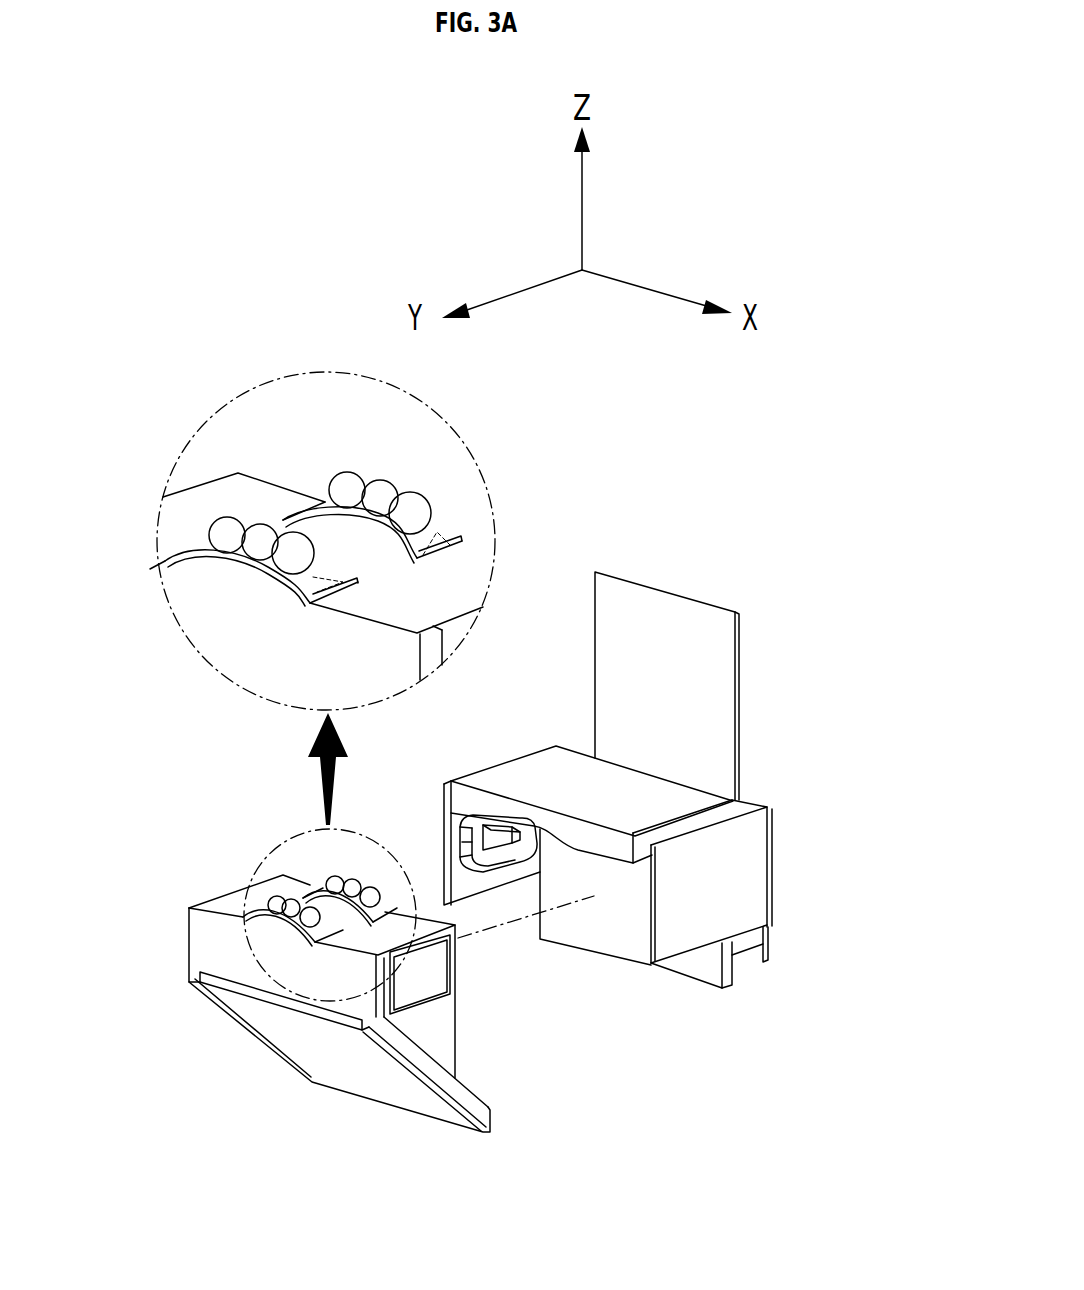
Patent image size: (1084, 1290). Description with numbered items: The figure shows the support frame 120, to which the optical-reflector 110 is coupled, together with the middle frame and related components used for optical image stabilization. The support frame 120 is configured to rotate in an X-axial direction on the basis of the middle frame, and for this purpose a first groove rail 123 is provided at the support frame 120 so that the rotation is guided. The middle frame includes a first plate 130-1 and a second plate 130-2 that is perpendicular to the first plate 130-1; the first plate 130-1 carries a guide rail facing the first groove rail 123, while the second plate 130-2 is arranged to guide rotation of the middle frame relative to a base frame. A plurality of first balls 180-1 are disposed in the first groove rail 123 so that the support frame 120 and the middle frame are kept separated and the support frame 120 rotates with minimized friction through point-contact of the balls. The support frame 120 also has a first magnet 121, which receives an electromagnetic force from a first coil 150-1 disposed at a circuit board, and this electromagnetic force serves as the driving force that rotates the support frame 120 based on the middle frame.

The optical-reflector 110 is at (297, 1046).
The support frame 120 is at (203, 953).
The first magnet 121 is at (427, 980).
The first groove rail 123 is at (425, 555).
The first plate 130-1 is at (654, 805).
The second plate 130-2 is at (620, 915).
The first coil 150-1 is at (495, 857).
The first balls 180-1 is at (343, 478).